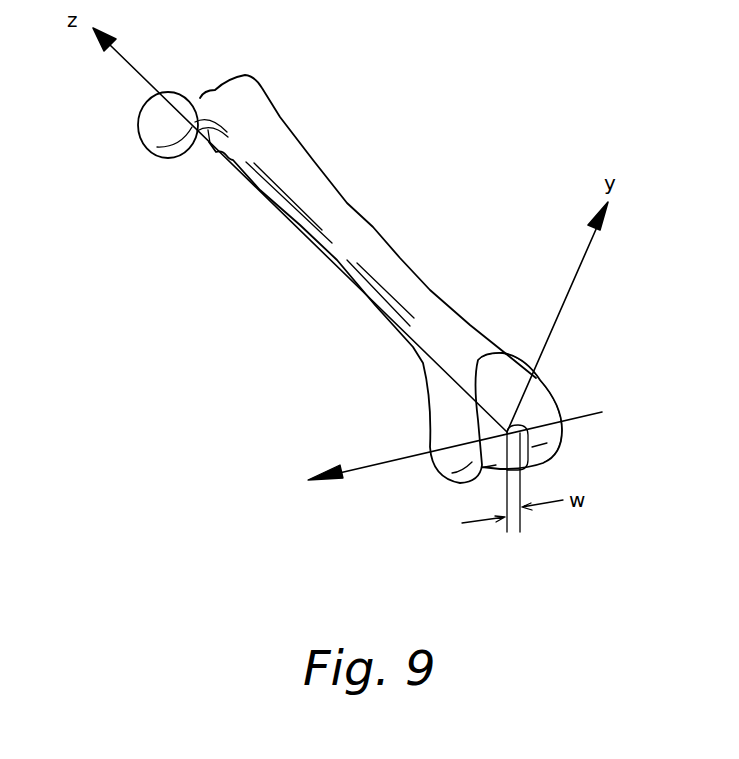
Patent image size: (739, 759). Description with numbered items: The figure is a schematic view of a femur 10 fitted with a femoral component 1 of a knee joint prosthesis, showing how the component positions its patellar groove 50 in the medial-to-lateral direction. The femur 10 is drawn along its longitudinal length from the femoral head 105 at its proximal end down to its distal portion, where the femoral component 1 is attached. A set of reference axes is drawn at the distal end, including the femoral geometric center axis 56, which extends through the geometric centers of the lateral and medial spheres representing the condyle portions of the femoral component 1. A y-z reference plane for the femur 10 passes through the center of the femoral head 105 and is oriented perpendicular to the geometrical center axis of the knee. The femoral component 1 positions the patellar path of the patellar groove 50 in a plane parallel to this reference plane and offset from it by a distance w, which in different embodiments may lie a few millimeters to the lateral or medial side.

The femur 10 is at (347, 279).
The femoral head 105 is at (155, 147).
The femoral component 1 is at (552, 397).
The patellar groove 50 is at (556, 446).
The femoral geometric center axis 56 is at (400, 457).